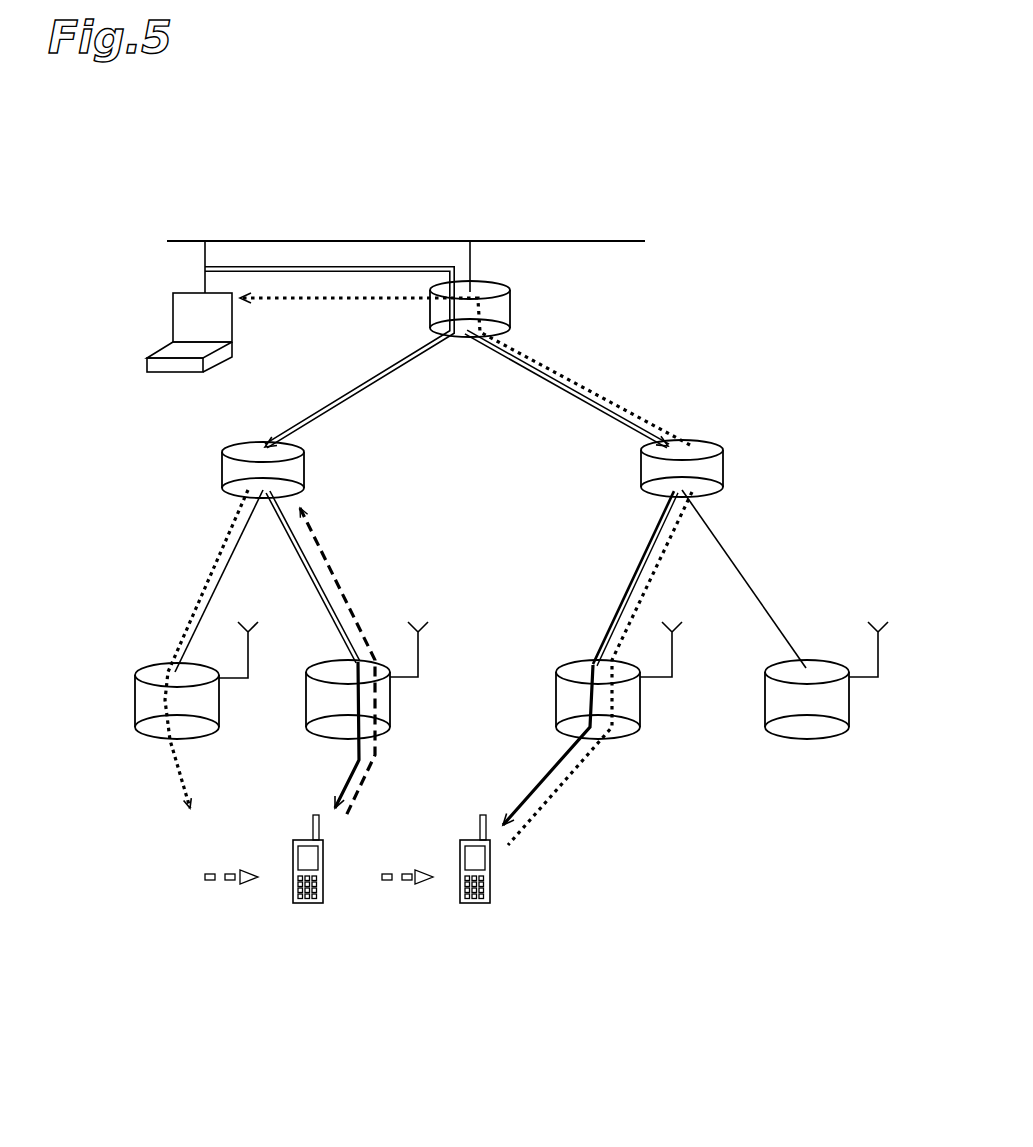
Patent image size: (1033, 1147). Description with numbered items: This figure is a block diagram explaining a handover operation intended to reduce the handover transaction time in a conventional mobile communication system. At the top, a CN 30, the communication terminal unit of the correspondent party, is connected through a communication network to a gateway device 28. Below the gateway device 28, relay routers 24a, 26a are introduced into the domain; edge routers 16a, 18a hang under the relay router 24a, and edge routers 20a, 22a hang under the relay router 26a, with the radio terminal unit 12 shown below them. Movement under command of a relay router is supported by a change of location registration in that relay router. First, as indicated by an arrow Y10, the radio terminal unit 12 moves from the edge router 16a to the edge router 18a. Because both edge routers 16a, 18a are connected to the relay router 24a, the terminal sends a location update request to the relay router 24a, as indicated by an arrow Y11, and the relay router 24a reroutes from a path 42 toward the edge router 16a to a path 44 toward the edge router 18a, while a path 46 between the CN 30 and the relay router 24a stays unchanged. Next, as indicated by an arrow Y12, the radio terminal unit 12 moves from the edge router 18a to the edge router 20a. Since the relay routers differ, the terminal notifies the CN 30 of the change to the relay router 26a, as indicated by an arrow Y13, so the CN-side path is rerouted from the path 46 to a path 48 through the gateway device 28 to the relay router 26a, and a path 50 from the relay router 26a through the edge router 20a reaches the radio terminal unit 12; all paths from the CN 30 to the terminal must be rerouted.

The CN (Correspondent Node) 30 is at (172, 315).
The gateway device 28 is at (510, 310).
The path 46 is at (386, 366).
The path 48 is at (588, 408).
The relay router 24a is at (305, 470).
The relay router 26a is at (725, 468).
The path 42 is at (196, 596).
The path 44 is at (320, 560).
The path 50 is at (626, 592).
The edge router 16a is at (135, 702).
The edge router 18a is at (392, 705).
The edge router 20a is at (640, 705).
The edge router 22a is at (850, 698).
The arrow Y10 is at (228, 872).
The arrow Y11 is at (383, 763).
The arrow Y12 is at (391, 882).
The arrow Y13 is at (560, 795).
The radio terminal unit 12 is at (310, 905).